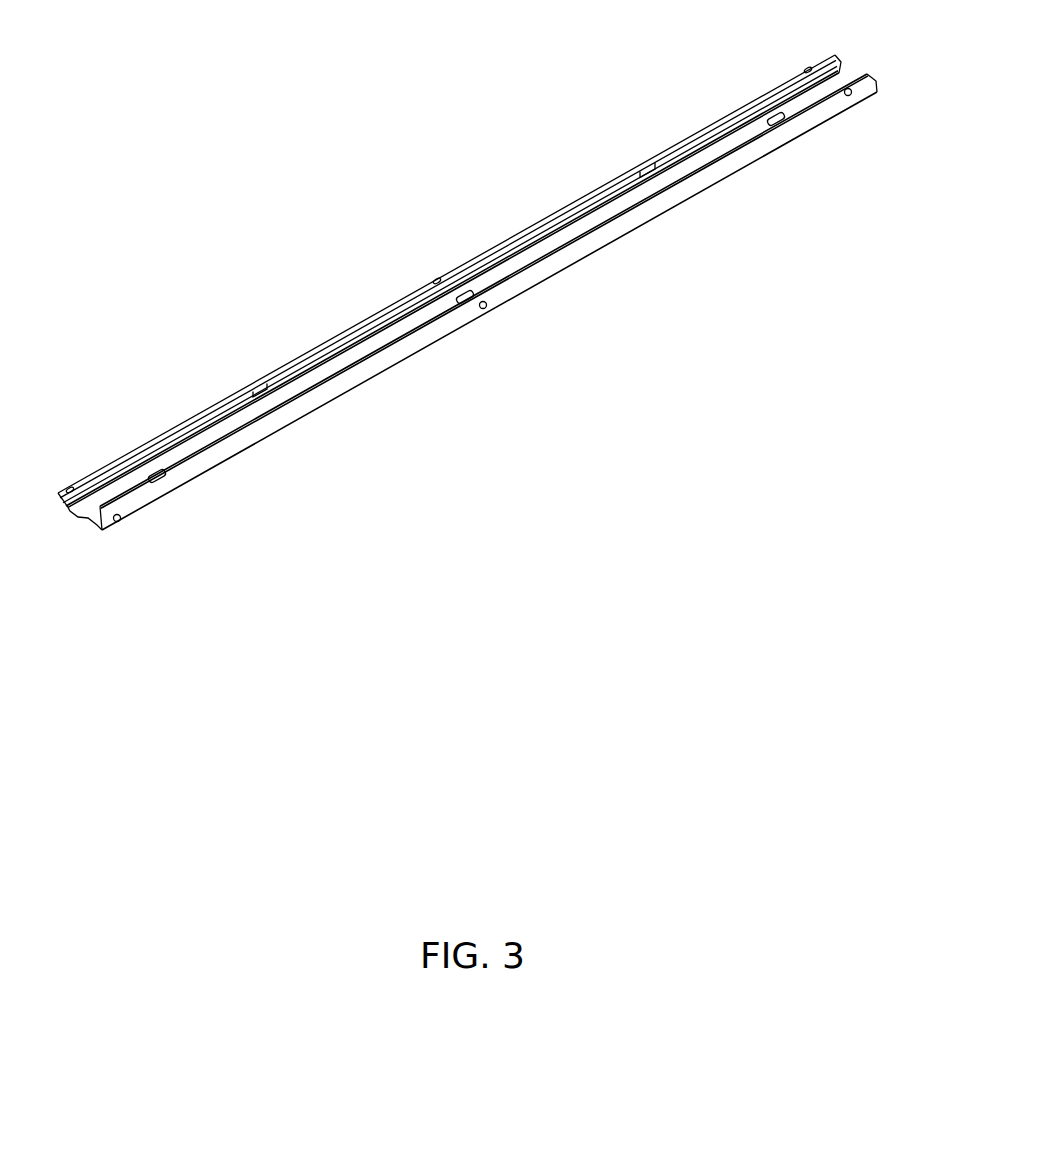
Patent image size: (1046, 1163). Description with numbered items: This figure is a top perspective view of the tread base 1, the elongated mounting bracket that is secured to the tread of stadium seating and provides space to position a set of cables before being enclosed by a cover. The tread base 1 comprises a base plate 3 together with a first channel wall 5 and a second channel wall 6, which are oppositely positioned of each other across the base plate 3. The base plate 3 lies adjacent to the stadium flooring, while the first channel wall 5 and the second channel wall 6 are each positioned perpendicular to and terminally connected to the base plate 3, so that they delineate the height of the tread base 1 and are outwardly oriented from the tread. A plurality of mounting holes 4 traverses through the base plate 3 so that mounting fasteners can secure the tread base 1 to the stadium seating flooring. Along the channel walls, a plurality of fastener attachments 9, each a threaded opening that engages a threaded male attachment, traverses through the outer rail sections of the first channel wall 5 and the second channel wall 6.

The tread base 1 is at (461, 294).
The base plate 3 is at (843, 73).
The mounting holes 4 is at (774, 116).
The first channel wall 5 is at (727, 165).
The second channel wall 6 is at (703, 127).
The fastener attachments 9 is at (808, 68).